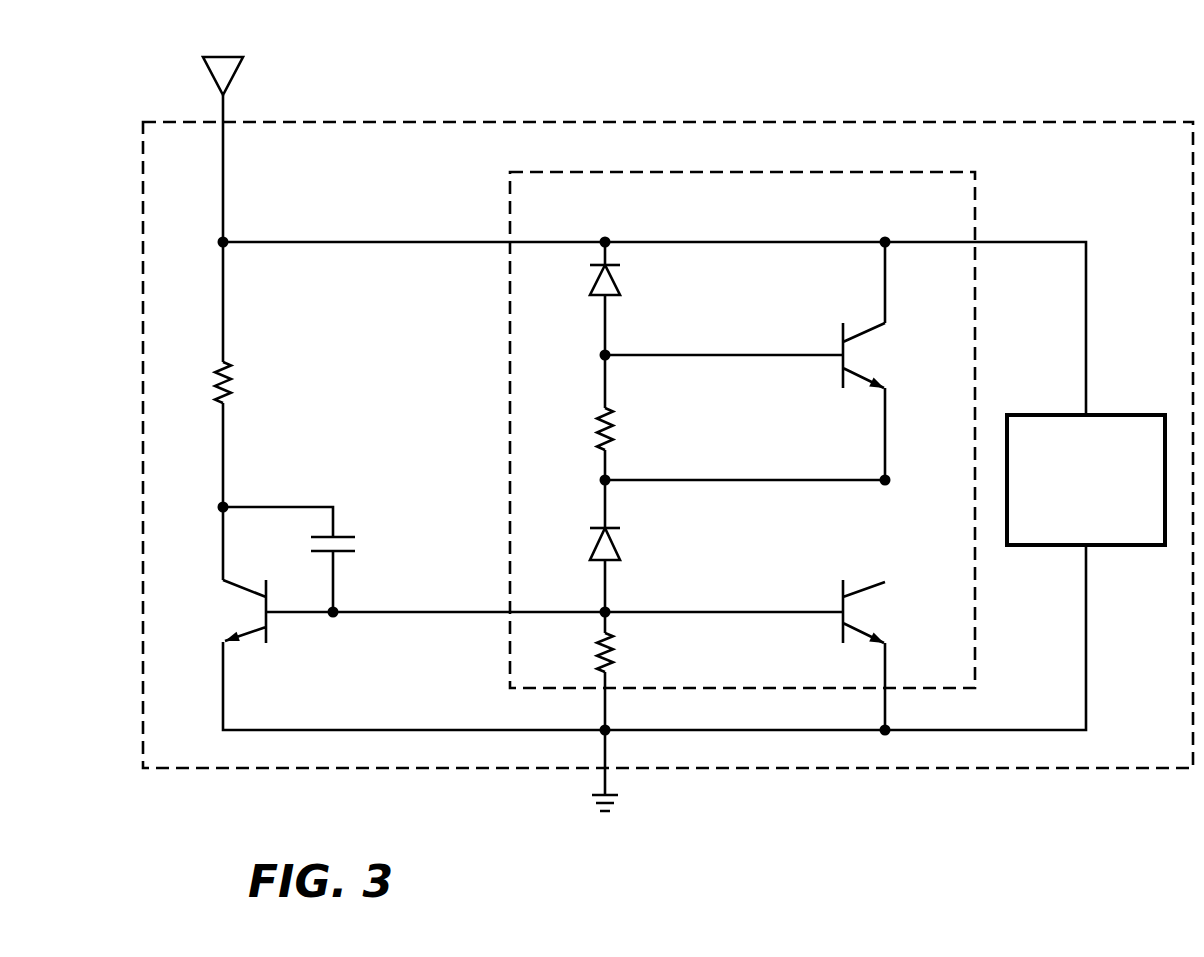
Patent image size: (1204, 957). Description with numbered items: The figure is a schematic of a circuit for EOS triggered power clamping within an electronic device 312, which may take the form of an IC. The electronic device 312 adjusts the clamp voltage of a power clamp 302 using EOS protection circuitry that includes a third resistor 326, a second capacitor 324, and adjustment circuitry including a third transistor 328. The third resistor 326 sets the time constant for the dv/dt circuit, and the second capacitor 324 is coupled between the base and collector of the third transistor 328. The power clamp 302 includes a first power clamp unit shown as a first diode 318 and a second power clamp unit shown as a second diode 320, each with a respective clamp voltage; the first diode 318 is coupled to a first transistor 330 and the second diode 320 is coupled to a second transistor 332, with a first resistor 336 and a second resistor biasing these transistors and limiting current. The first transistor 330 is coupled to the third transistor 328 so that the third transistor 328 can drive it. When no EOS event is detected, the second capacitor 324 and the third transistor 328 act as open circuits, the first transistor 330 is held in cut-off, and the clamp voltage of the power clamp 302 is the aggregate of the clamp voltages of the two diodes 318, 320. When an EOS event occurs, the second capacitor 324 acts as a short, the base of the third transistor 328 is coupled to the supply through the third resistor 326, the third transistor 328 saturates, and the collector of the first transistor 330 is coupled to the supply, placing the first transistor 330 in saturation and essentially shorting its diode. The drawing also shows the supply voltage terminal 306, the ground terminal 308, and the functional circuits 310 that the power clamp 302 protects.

The power clamp 302 is at (742, 430).
The supply voltage terminal Vcc 306 is at (245, 60).
The ground terminal 308 is at (618, 797).
The functional circuit(s) 310 is at (1086, 480).
The electronic device 312 is at (668, 445).
The diode 318 is at (618, 555).
The diode 320 is at (618, 288).
The capacitor C2 324 is at (348, 538).
The resistor R3 326 is at (215, 380).
The transistor Q3 328 is at (247, 632).
The transistor Q1 330 is at (597, 420).
The transistor Q2 332 is at (870, 325).
The resistor R1 336 is at (600, 652).